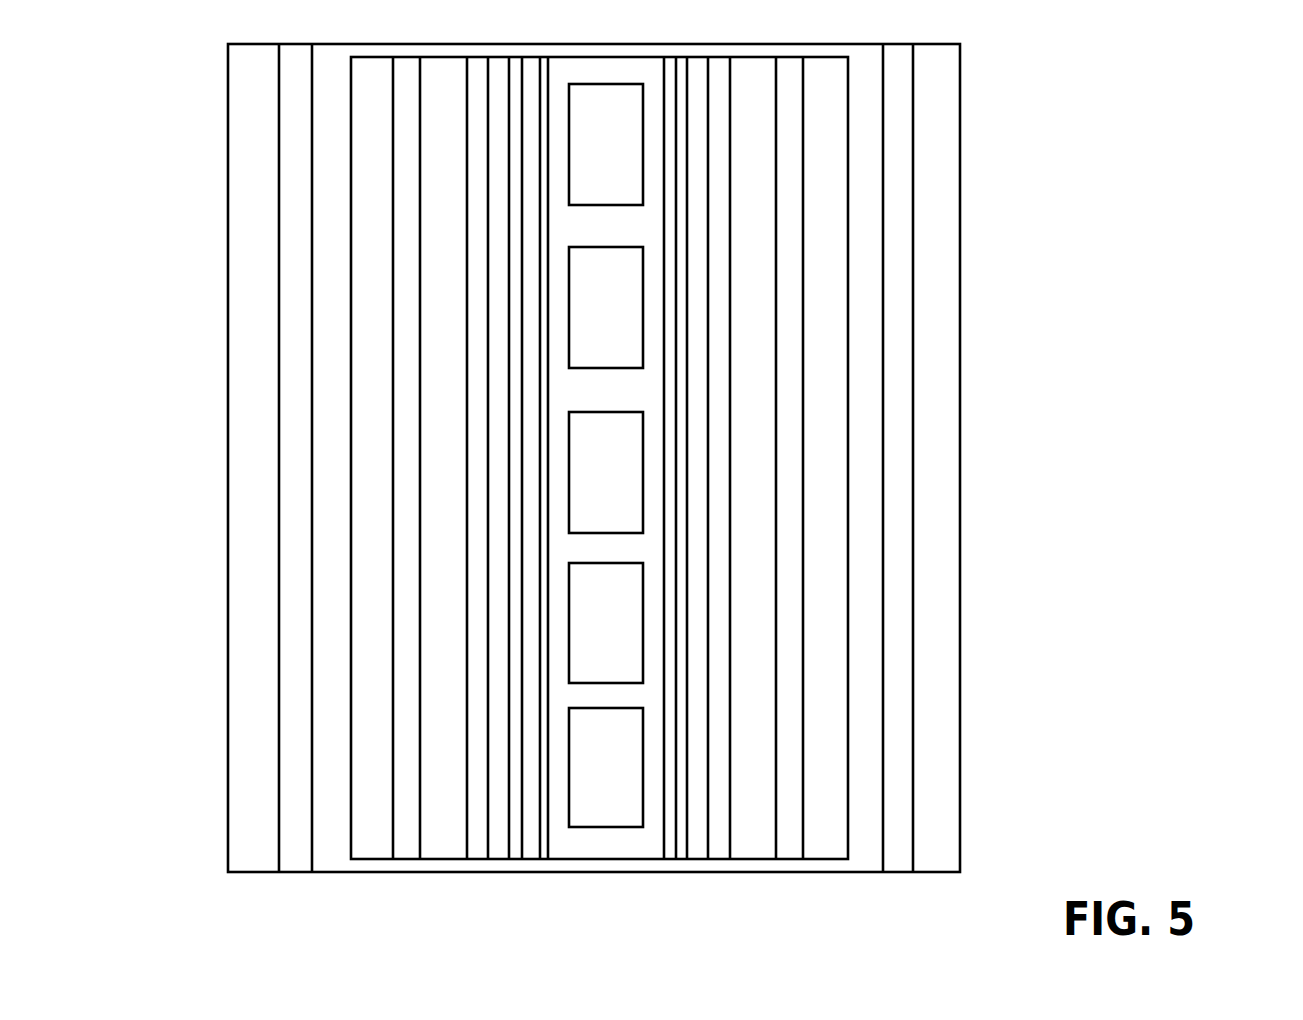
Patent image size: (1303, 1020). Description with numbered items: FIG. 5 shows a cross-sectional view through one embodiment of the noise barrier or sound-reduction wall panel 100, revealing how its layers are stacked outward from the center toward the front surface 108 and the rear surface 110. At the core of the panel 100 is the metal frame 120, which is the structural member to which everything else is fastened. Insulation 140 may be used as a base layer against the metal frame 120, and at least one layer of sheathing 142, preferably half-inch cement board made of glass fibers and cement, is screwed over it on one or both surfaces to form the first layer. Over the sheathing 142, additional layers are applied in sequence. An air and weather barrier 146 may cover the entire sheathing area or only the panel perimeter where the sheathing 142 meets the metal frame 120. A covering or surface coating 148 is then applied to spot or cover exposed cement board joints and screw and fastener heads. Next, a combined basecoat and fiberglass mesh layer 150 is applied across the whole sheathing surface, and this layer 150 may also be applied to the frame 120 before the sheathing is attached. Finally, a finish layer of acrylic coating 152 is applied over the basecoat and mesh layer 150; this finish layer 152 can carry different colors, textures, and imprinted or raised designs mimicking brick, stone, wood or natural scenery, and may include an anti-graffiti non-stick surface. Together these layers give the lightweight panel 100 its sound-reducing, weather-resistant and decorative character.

The noise barrier wall panel 100 is at (1184, 277).
The front surface 108 is at (215, 336).
The rear surface 110 is at (1048, 192).
The metal frame 120 is at (585, 839).
The insulation 140 is at (533, 839).
The sheathing 142 is at (499, 798).
The air and weather barrier 146 is at (447, 788).
The covering coating layer 148 is at (335, 790).
The basecoat and fiberglass mesh layer 150 is at (295, 796).
The acrylic finish layer 152 is at (247, 725).